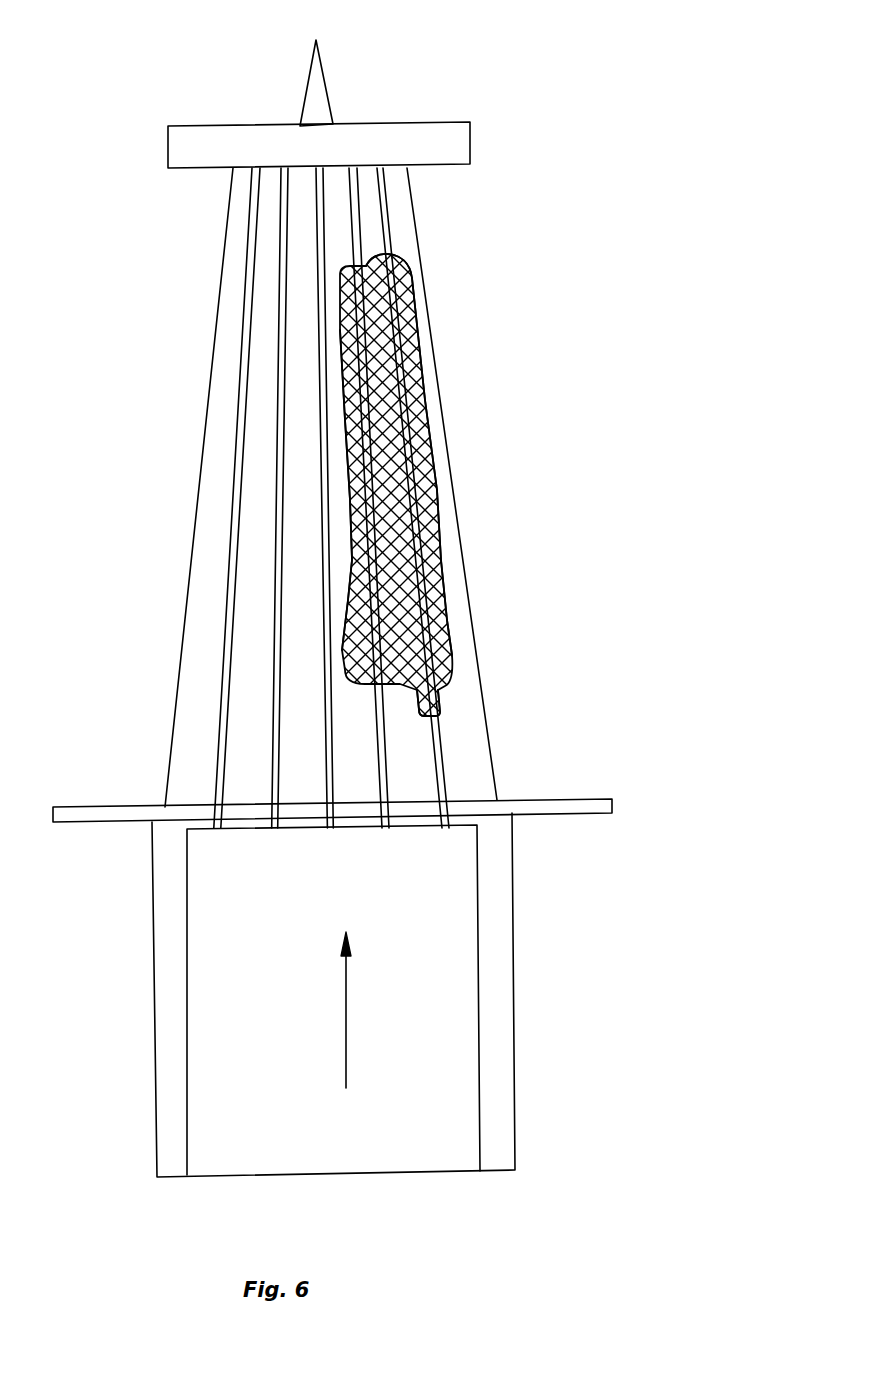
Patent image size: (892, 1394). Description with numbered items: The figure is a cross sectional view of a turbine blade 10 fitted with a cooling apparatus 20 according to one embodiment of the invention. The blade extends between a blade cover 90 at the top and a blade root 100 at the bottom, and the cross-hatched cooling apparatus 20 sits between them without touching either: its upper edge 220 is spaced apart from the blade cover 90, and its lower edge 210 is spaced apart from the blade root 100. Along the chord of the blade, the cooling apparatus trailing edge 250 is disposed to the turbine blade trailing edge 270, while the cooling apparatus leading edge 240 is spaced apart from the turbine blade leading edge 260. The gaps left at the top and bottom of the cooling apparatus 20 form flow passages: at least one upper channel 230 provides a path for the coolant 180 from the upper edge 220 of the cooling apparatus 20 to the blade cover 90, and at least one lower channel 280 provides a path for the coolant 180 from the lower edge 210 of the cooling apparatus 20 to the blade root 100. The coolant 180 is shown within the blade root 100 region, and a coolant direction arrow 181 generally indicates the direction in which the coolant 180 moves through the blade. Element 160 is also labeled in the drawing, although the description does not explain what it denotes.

The turbine blade 10 is at (405, 88).
The blade cover 90 is at (272, 143).
The upper channel 230 is at (385, 213).
The upper edge 220 is at (396, 256).
The cooling apparatus 20 is at (405, 307).
The turbine blade trailing edge 270 is at (443, 422).
The cooling apparatus trailing edge 250 is at (435, 483).
The turbine blade leading edge 260 is at (210, 396).
The left filament pair 160 is at (233, 518).
The cooling apparatus leading edge 240 is at (352, 542).
The lower edge 210 is at (440, 696).
The lower channel 280 is at (445, 760).
The blade root 100 is at (565, 813).
The coolant 180 is at (287, 1134).
The coolant direction arrow 181 is at (347, 1022).